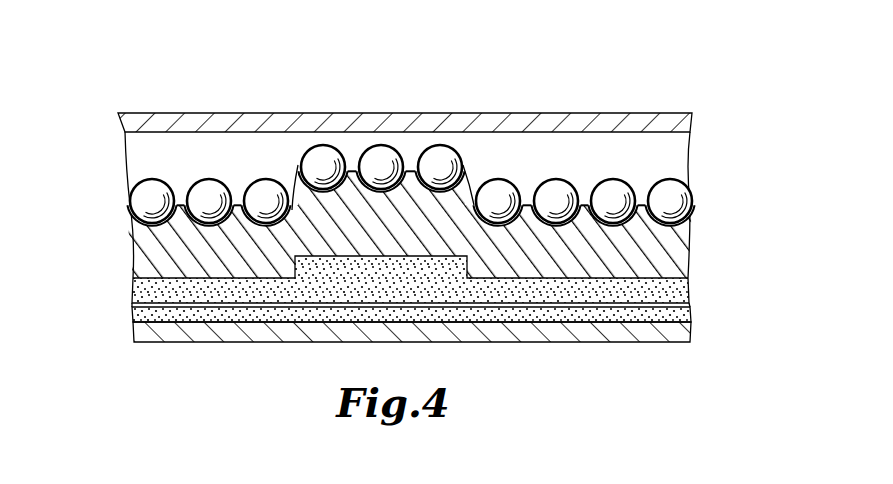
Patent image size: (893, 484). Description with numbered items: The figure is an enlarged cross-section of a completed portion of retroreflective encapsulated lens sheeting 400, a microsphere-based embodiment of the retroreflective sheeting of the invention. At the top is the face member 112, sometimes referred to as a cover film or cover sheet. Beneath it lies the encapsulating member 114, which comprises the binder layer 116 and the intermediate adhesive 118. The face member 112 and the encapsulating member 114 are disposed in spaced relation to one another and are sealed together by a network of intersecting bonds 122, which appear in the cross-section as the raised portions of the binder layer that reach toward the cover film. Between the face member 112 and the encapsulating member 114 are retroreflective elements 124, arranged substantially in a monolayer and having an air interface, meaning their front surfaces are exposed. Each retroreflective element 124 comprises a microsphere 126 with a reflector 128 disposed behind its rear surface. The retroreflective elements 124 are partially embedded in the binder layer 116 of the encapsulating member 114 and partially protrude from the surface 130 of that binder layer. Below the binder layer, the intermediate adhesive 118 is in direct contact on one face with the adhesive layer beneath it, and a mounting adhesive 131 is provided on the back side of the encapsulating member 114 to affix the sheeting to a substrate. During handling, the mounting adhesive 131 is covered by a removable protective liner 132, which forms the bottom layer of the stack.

The retroreflective encapsulated lens sheeting 400 is at (520, 72).
The face member 112 is at (646, 112).
The encapsulating member 114 is at (110, 205).
The binder layer 116 is at (677, 258).
The intermediate adhesive 118 is at (135, 296).
The network of intersecting bonds 122 is at (348, 143).
The retroreflective elements 124 is at (134, 180).
The microspheres 126 is at (445, 153).
The reflectors 128 is at (228, 228).
The surface 130 is at (188, 178).
The mounting adhesive 131 is at (693, 310).
The removable protective liner 132 is at (135, 335).